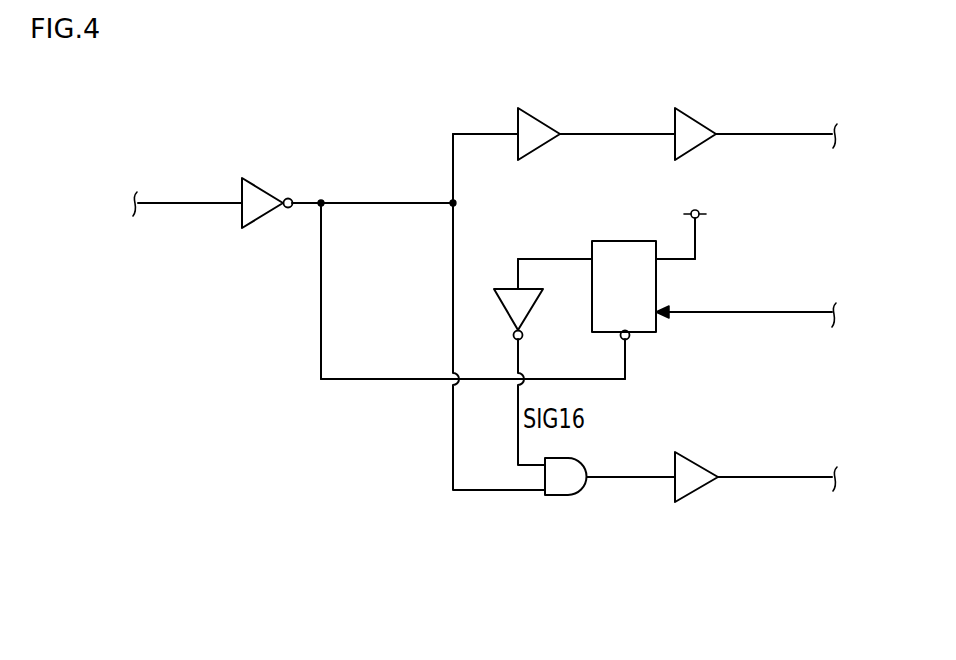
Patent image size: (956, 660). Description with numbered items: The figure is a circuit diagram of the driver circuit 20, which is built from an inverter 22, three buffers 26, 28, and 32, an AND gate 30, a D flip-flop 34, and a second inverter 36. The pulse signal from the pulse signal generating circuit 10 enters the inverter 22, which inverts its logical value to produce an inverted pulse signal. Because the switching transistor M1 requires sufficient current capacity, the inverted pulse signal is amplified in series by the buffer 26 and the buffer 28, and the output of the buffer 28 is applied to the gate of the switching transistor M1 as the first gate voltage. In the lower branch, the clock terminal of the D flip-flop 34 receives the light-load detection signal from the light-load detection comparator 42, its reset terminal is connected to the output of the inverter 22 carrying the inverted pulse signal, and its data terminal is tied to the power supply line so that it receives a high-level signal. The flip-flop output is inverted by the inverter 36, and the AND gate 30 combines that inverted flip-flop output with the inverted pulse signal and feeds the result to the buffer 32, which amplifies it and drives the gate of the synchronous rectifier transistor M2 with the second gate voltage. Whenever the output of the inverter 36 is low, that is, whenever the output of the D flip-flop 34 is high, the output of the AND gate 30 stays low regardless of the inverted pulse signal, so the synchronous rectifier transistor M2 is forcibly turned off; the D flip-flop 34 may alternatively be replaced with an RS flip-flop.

The pulse signal generating circuit 10 is at (173, 195).
The driver circuit 20 is at (500, 628).
The inverter 22 is at (265, 182).
The buffer 26 is at (541, 120).
The buffer 28 is at (698, 120).
The AND gate 30 is at (568, 496).
The buffer 32 is at (697, 490).
The D flip-flop 34 is at (632, 240).
The inverter 36 is at (529, 310).
The light-load detection comparator 42 is at (762, 306).
The switching transistor M1 is at (851, 136).
The synchronous rectifier transistor M2 is at (851, 479).